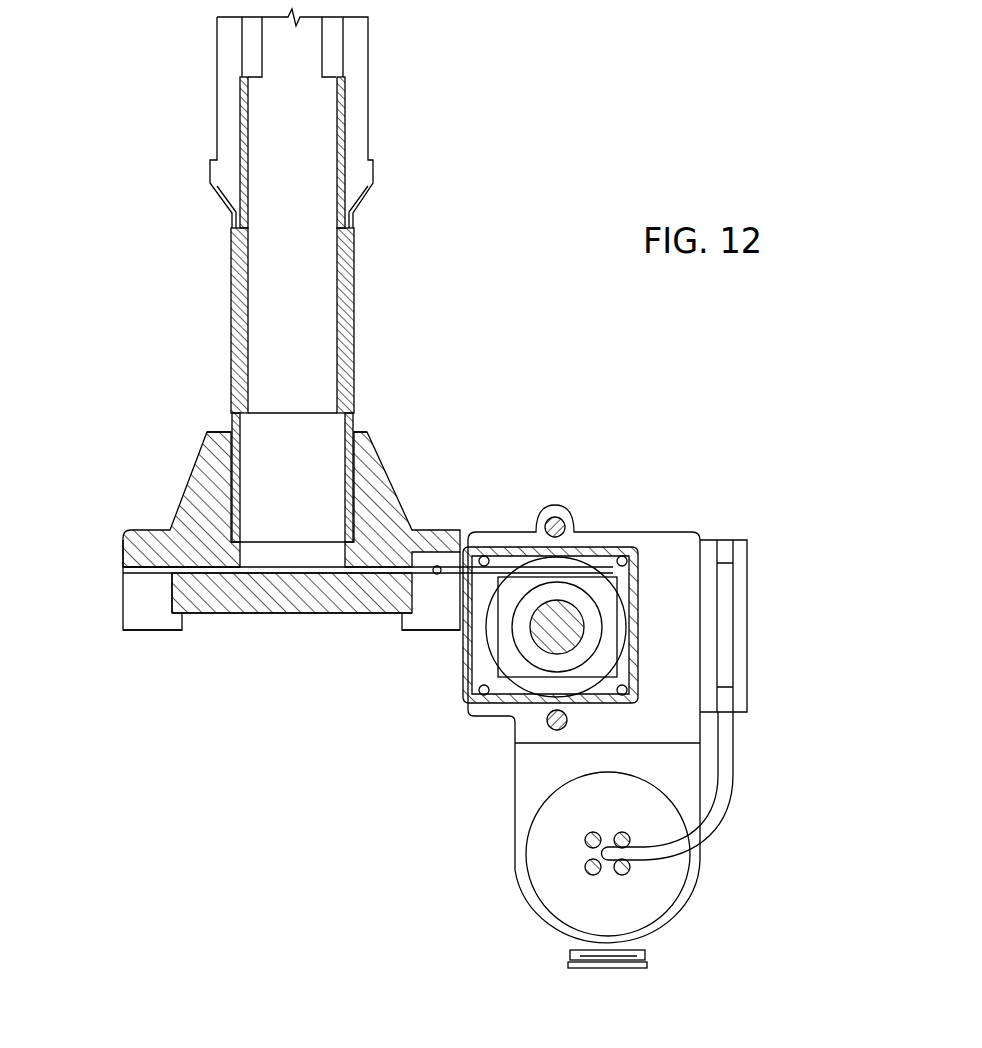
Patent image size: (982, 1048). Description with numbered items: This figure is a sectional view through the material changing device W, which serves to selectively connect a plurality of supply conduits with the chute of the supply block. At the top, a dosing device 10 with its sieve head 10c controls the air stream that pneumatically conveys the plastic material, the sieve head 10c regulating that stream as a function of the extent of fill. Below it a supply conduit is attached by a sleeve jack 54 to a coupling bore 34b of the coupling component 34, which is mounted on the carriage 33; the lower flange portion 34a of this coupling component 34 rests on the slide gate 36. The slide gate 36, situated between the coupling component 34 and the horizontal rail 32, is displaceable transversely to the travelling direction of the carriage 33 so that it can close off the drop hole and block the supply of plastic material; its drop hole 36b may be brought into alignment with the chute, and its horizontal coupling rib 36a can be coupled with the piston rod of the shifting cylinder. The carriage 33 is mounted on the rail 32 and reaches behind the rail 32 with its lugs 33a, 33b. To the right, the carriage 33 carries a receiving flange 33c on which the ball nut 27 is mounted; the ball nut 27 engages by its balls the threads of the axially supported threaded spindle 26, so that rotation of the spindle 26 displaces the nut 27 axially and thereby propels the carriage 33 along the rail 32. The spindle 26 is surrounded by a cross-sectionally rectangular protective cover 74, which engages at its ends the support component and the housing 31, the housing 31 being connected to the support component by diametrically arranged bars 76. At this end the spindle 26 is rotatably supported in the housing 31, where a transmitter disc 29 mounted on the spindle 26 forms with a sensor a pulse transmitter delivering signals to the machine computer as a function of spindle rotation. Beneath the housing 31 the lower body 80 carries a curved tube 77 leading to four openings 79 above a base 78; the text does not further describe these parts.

The dosing device 10 is at (380, 128).
The sieve head 10c is at (370, 73).
The sleeve jack 54 is at (352, 353).
The coupling component 34 is at (403, 477).
The flange plate 34a is at (143, 548).
The coupling bore 34b is at (370, 432).
The slide gate 36 is at (272, 615).
The coupling rib 36a is at (437, 575).
The drop hole 36b is at (202, 615).
The horizontal rail 32 is at (362, 612).
The carriage 33 is at (117, 635).
The lug 33a is at (178, 628).
The lug 33b is at (406, 628).
The receiving flange 33c is at (642, 548).
The material changing device W is at (124, 356).
The housing 80 is at (540, 768).
The bar 76 is at (565, 522).
The protective cover 74 is at (612, 595).
The ball nut 27 is at (590, 645).
The threaded spindle 26 is at (570, 622).
The housing 31 is at (675, 675).
The transmitter disc 29 is at (588, 690).
The supply tube 77 is at (663, 873).
The nozzle openings 79 is at (590, 870).
The base 78 is at (668, 933).